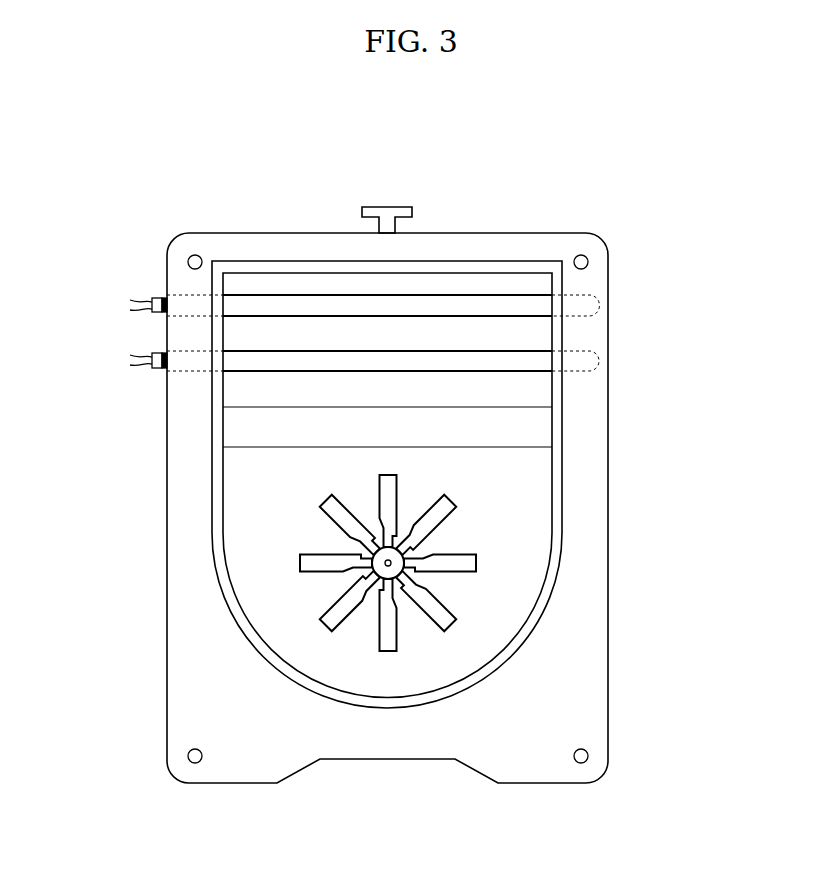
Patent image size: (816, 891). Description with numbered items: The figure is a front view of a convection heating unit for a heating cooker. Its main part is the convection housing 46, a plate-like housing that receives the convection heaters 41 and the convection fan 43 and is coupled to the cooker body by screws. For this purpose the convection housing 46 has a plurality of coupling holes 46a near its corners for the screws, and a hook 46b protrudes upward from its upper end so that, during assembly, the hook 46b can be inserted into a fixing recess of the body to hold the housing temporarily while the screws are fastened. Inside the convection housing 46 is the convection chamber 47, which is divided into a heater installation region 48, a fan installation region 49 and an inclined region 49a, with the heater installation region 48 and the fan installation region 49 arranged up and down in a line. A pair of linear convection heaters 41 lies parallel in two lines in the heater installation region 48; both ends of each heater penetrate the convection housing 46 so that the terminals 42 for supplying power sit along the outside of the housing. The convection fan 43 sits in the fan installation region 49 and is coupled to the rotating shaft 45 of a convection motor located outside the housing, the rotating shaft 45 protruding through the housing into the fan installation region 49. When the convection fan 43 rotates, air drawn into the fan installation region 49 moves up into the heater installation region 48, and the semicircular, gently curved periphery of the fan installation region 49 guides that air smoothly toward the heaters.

The convection heaters 41 is at (283, 360).
The terminals 42 is at (160, 348).
The convection fan 43 is at (452, 607).
The rotating shaft 45 is at (390, 562).
The convection housing 46 is at (580, 700).
The coupling holes 46a is at (586, 257).
The hook 46b is at (390, 208).
The convection chamber 47 is at (670, 364).
The heater installation region 48 is at (513, 325).
The fan installation region 49 is at (506, 468).
The inclined region 49a is at (538, 437).